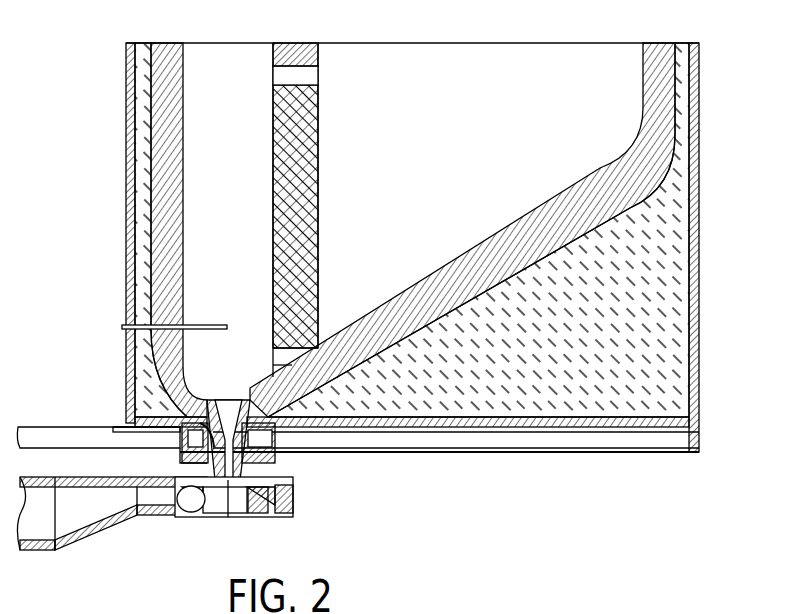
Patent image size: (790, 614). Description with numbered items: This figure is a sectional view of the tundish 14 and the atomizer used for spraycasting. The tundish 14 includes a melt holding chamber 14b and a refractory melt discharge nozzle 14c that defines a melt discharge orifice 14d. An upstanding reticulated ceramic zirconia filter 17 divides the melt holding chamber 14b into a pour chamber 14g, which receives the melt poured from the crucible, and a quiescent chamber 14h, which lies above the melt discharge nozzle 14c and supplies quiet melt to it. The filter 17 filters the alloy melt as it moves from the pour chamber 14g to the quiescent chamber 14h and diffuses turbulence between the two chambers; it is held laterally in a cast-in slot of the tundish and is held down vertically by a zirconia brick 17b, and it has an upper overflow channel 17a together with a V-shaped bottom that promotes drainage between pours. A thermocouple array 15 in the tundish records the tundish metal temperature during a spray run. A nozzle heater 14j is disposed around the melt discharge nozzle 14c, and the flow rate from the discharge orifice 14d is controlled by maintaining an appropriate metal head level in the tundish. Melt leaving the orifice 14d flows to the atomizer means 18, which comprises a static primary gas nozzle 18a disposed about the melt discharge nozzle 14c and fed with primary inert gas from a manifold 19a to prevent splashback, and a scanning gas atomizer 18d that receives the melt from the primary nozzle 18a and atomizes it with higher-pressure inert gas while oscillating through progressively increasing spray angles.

The tundish 14 is at (702, 200).
The melt holding chamber 14b is at (558, 95).
The melt discharge nozzle 14c is at (229, 400).
The melt discharge orifice 14d is at (228, 517).
The pour chamber 14g is at (518, 165).
The quiescent chamber 14h is at (243, 182).
The nozzle heater 14j is at (110, 428).
The thermocouple array 15 is at (210, 325).
The filter 17 is at (318, 125).
The upper overflow channel 17a is at (318, 76).
The zirconia brick 17b is at (298, 53).
The atomizer means 18 is at (322, 535).
The static primary gas nozzle 18a is at (283, 463).
The scanning gas atomizer 18d is at (300, 515).
The manifold 19a is at (252, 441).